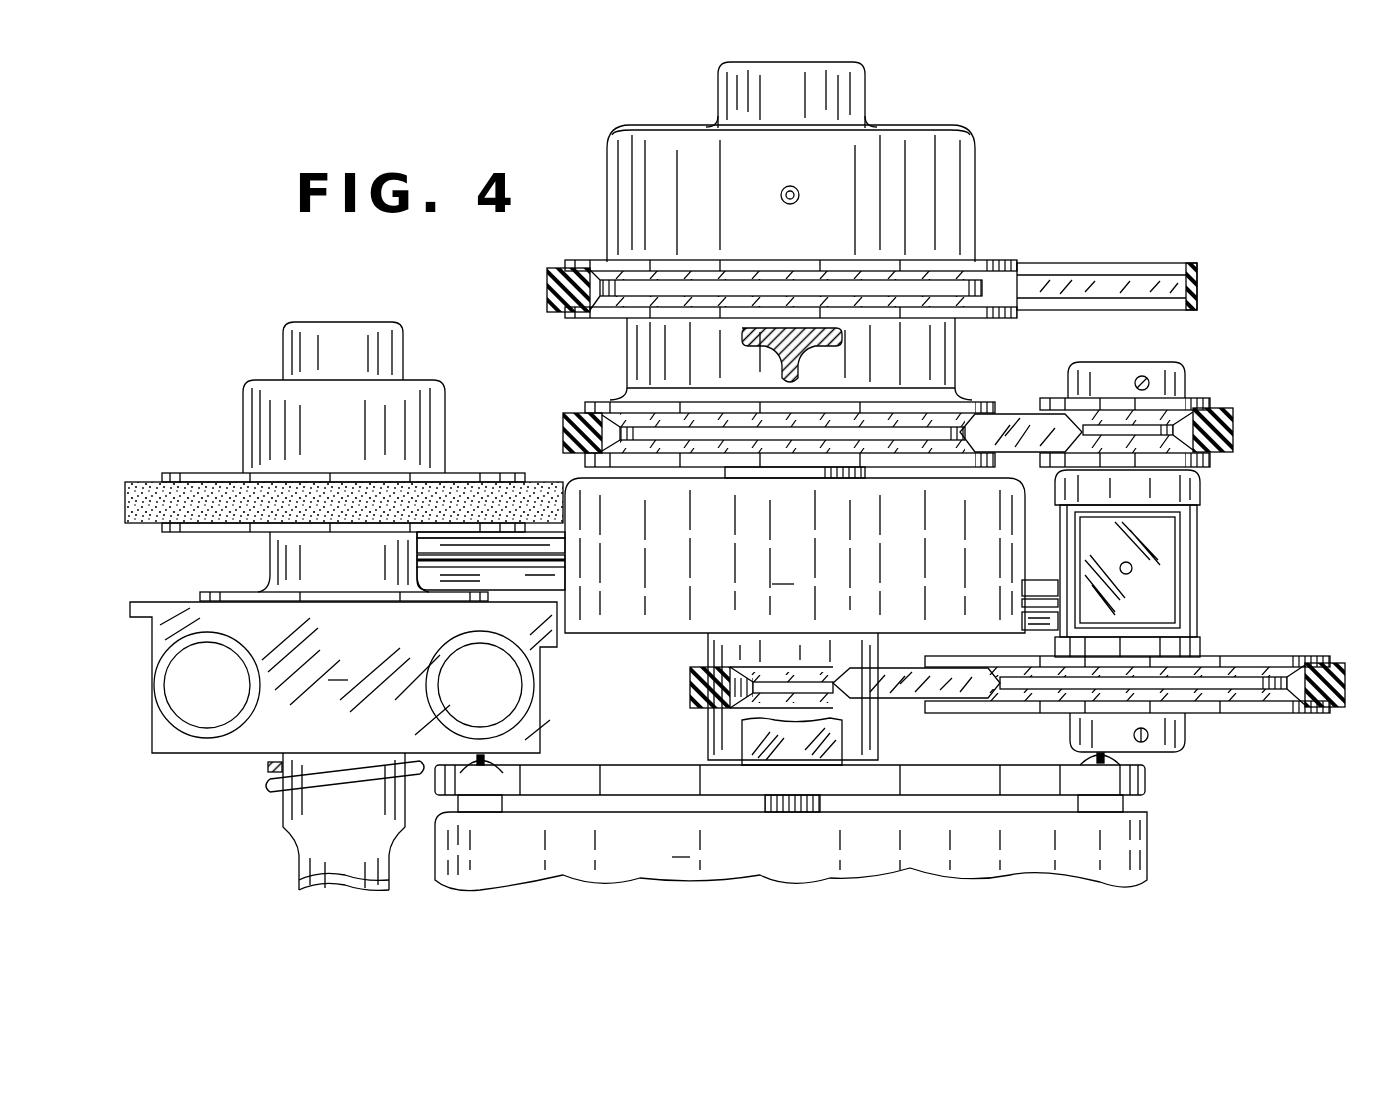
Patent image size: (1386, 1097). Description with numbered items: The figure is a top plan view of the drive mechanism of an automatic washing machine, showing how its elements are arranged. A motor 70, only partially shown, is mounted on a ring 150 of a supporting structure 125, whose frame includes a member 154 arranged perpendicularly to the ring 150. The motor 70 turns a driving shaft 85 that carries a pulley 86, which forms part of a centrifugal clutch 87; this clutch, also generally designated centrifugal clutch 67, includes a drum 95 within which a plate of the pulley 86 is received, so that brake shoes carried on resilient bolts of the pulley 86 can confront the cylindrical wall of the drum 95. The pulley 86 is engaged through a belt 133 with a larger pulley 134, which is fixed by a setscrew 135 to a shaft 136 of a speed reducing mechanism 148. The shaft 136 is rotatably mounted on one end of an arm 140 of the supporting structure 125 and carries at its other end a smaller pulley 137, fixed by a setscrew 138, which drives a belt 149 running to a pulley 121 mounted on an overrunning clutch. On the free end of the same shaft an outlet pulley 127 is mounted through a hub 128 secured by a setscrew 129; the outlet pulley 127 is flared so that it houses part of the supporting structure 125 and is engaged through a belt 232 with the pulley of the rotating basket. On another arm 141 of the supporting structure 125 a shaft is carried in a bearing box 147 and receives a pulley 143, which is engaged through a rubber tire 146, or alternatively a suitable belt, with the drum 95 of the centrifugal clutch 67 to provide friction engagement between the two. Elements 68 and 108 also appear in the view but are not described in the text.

The centrifugal clutch 67 is at (310, 816).
The mounting plate 68 is at (343, 677).
The motor 70 is at (791, 851).
The driving shaft 85 is at (807, 813).
The pulley 86 is at (868, 744).
The centrifugal clutch 87 is at (668, 647).
The drum 95 is at (795, 555).
The collar 108 is at (830, 470).
The pulley 121 is at (968, 406).
The supporting structure 125 is at (937, 362).
The outlet pulley 127 is at (913, 130).
The hub 128 is at (740, 87).
The setscrew 129 is at (796, 203).
The belt 133 is at (880, 694).
The pulley 134 is at (1255, 710).
The setscrew 135 is at (1148, 735).
The shaft 136 is at (1165, 466).
The pulley 137 is at (1197, 408).
The setscrew 138 is at (1142, 376).
The arm 140 is at (1040, 605).
The arm 141 is at (519, 586).
The pulley 143 is at (253, 397).
The rubber tire 146 is at (158, 524).
The bearing box 147 is at (285, 552).
The speed reducing mechanism 148 is at (1190, 558).
The belt 149 is at (1055, 444).
The ring 150 is at (683, 771).
The member 154 is at (823, 756).
The belt 232 is at (1125, 268).